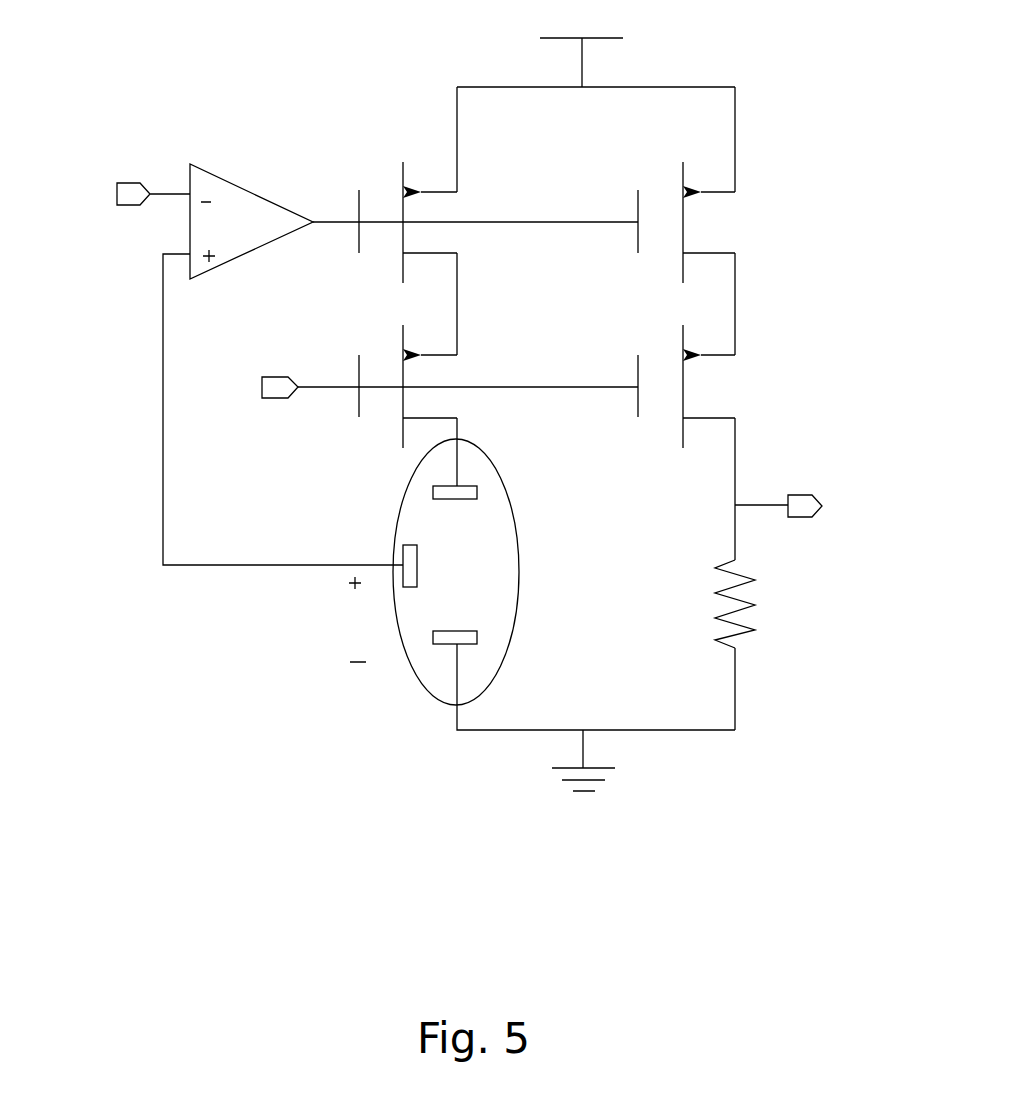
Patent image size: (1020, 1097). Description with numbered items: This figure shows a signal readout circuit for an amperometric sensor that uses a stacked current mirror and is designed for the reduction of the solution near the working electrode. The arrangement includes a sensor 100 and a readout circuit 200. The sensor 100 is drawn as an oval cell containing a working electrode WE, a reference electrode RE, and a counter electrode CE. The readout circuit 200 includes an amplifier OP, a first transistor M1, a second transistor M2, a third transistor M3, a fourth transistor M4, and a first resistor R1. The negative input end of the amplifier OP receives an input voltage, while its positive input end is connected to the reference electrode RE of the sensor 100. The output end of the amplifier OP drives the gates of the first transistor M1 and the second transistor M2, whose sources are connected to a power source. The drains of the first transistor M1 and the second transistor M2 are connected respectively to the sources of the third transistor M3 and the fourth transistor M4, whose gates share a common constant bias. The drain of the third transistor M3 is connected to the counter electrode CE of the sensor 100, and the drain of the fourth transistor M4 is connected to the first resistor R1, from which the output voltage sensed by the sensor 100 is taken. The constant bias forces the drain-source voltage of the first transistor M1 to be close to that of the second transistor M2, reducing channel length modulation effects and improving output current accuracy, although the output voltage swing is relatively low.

The sensor 100 is at (430, 572).
The readout circuit 200 is at (443, 395).
The first transistor M1 is at (437, 222).
The second transistor M2 is at (708, 222).
The third transistor M3 is at (437, 386).
The fourth transistor M4 is at (708, 386).
The first resistor R1 is at (711, 604).
The amplifier OP is at (251, 221).
The counter electrode CE is at (494, 494).
The reference electrode RE is at (437, 566).
The working electrode WE is at (498, 636).